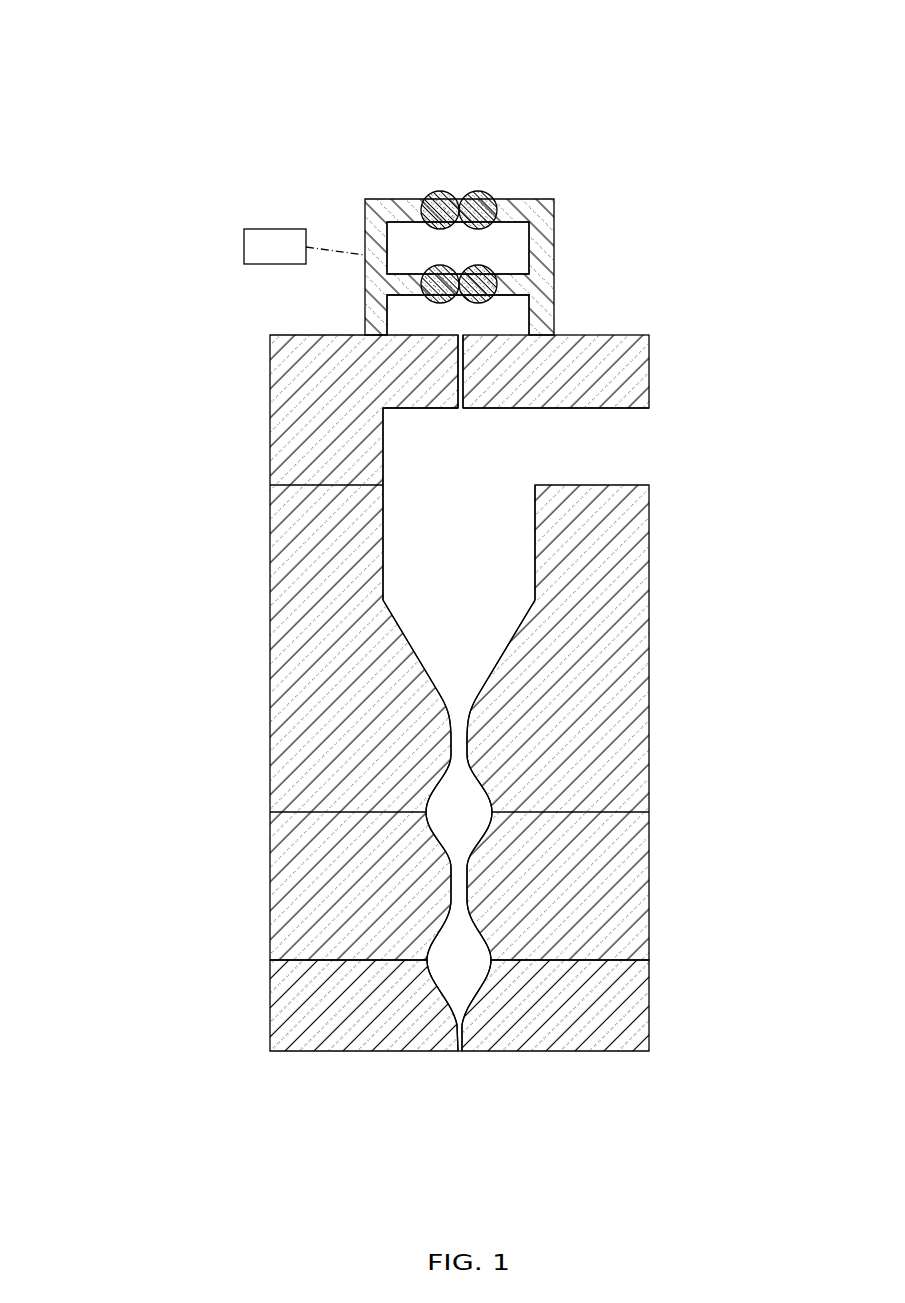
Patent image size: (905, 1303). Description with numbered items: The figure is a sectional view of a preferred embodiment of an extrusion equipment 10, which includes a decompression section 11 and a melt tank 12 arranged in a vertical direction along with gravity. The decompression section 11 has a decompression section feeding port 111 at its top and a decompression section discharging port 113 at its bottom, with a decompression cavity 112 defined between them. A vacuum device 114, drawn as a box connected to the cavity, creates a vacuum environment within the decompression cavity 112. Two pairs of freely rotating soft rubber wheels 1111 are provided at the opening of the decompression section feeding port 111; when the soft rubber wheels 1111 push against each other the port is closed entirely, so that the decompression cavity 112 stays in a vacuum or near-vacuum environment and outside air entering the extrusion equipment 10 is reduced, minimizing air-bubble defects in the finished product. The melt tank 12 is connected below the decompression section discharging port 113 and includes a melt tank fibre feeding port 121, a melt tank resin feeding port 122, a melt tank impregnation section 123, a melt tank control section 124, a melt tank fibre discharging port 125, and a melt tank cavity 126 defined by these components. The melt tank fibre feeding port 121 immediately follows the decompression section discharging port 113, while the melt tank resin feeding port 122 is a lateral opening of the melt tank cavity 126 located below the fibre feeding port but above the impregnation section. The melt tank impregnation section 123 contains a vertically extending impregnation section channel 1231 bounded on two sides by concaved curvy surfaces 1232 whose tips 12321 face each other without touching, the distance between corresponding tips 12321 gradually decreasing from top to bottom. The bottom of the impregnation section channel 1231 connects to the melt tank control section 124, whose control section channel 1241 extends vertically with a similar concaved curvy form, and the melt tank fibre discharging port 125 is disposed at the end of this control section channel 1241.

The extrusion equipment 10 is at (725, 75).
The decompression section 11 is at (338, 165).
The decompression section feeding port 111 is at (455, 199).
The soft rubber wheels 1111 is at (498, 199).
The decompression cavity 112 is at (512, 240).
The decompression section discharging port 113 is at (513, 325).
The vacuum device 114 is at (263, 230).
The melt tank 12 is at (146, 458).
The melt tank fibre feeding port 121 is at (458, 335).
The melt tank resin feeding port 122 is at (632, 450).
The melt tank impregnation section 123 is at (256, 610).
The impregnation section channel 1231 is at (458, 752).
The concaved curvy surfaces 1232 is at (405, 638).
The tips 12321 is at (450, 747).
The melt tank control section 124 is at (256, 963).
The control section channel 1241 is at (458, 1023).
The melt tank fibre discharging port 125 is at (460, 1052).
The melt tank cavity 126 is at (457, 533).